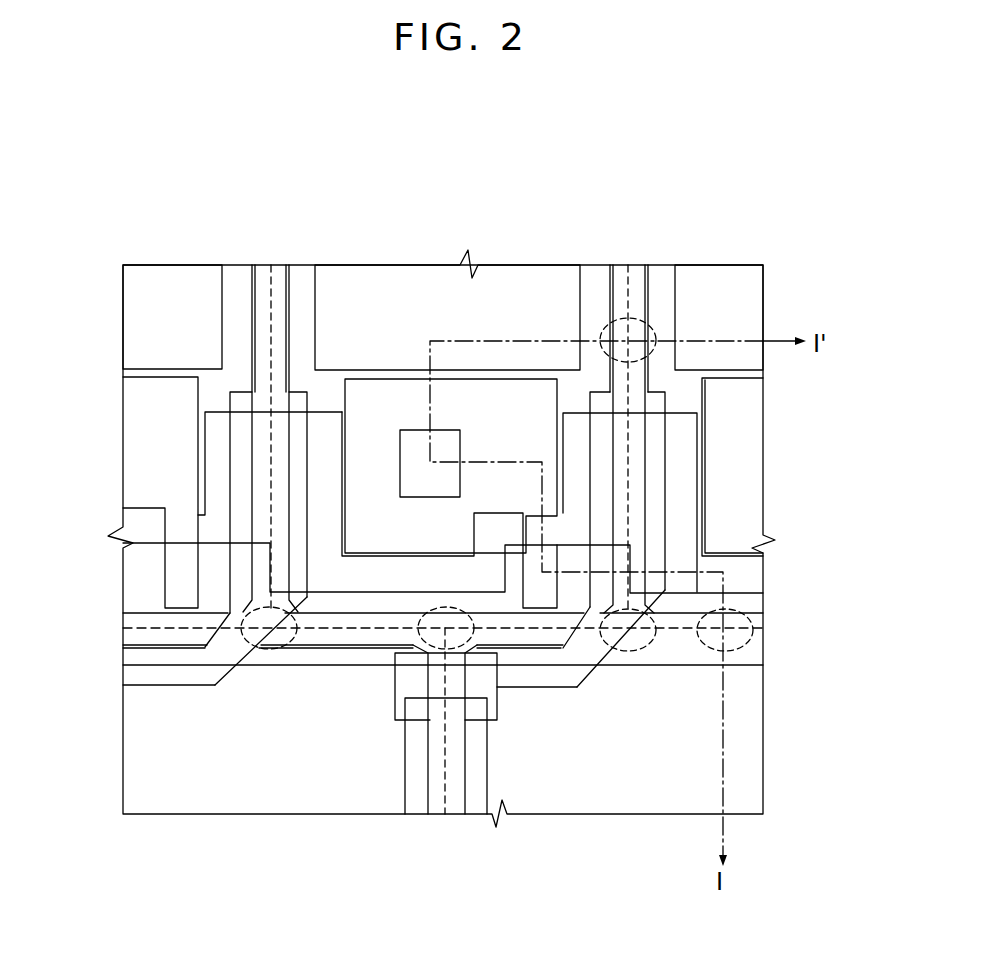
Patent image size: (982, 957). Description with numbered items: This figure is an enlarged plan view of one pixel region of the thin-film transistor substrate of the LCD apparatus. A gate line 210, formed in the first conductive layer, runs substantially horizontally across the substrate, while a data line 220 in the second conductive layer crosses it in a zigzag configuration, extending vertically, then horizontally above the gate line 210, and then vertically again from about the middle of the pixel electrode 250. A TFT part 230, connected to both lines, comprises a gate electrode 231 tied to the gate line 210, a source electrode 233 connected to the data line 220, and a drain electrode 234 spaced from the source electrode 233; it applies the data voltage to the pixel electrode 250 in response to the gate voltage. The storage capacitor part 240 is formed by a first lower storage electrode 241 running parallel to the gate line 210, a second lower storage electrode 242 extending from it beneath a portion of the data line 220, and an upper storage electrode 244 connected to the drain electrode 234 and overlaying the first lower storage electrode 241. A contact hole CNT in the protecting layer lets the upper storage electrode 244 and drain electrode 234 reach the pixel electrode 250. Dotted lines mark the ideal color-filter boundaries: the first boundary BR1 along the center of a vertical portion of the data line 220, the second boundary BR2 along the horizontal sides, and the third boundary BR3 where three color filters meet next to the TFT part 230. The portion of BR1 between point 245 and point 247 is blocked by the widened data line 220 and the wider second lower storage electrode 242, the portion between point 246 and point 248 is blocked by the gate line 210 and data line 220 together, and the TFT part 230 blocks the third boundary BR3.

The gate line 210 is at (735, 672).
The data line 220 is at (647, 306).
The TFT part 230 is at (568, 606).
The gate electrode 231 is at (578, 564).
The source electrode 233 is at (600, 538).
The drain electrode 234 is at (562, 528).
The storage capacitor part 240 is at (363, 419).
The first lower storage electrode 241 is at (342, 486).
The second lower storage electrode 242 is at (222, 293).
The upper storage electrode 244 is at (342, 510).
The point 245 is at (342, 416).
The point 246 is at (447, 700).
The point 247 is at (248, 607).
The point 248 is at (445, 635).
The pixel electrode 250 is at (288, 337).
The contact hole CNT is at (398, 466).
The first boundary BR1 is at (618, 318).
The second boundary BR2 is at (752, 626).
The third boundary BR3 is at (279, 650).